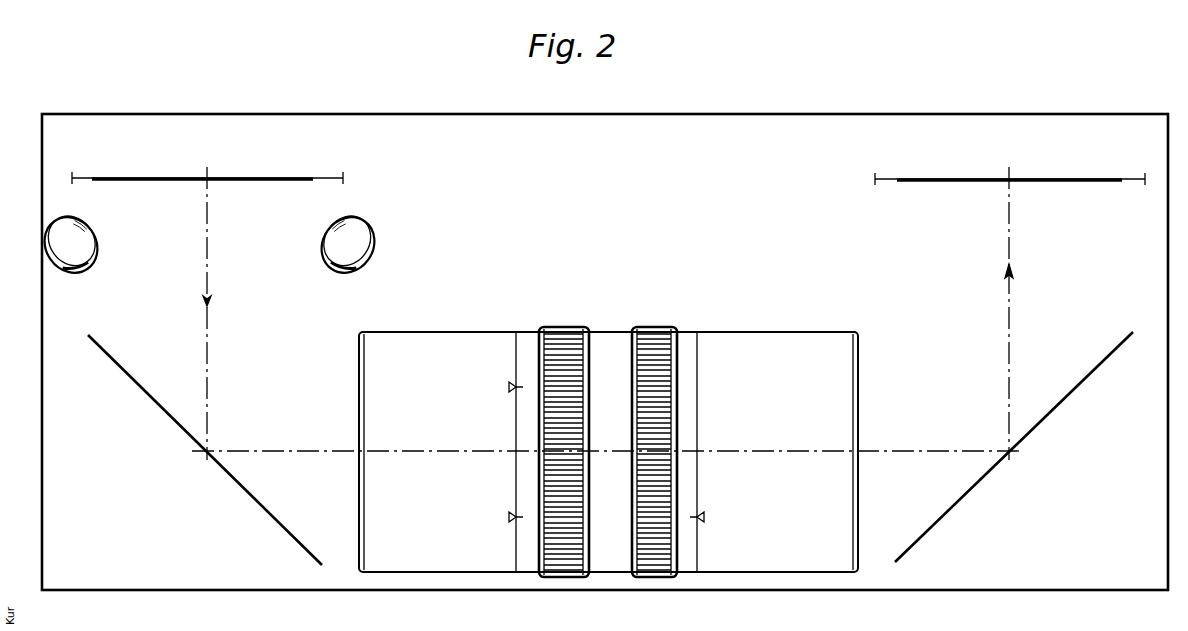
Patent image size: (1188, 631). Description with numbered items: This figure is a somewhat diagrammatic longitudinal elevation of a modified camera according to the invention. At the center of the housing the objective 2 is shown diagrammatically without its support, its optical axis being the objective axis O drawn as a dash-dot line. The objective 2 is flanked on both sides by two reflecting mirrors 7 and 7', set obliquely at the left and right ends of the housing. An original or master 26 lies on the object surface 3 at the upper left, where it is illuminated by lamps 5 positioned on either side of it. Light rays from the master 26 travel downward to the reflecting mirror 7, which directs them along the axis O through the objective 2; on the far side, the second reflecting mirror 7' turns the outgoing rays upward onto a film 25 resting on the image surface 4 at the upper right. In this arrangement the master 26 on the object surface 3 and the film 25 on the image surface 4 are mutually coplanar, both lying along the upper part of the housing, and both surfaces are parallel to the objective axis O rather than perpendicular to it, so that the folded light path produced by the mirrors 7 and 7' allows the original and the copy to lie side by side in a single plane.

The objective 2 is at (789, 343).
The object surface 3 is at (85, 178).
The image surface 4 is at (952, 178).
The lamps 5 is at (66, 274).
The reflecting mirror 7 is at (205, 450).
The reflecting mirror 7' is at (1014, 447).
The film 25 is at (904, 183).
The original or master 26 is at (285, 182).
The objective axis O is at (920, 451).